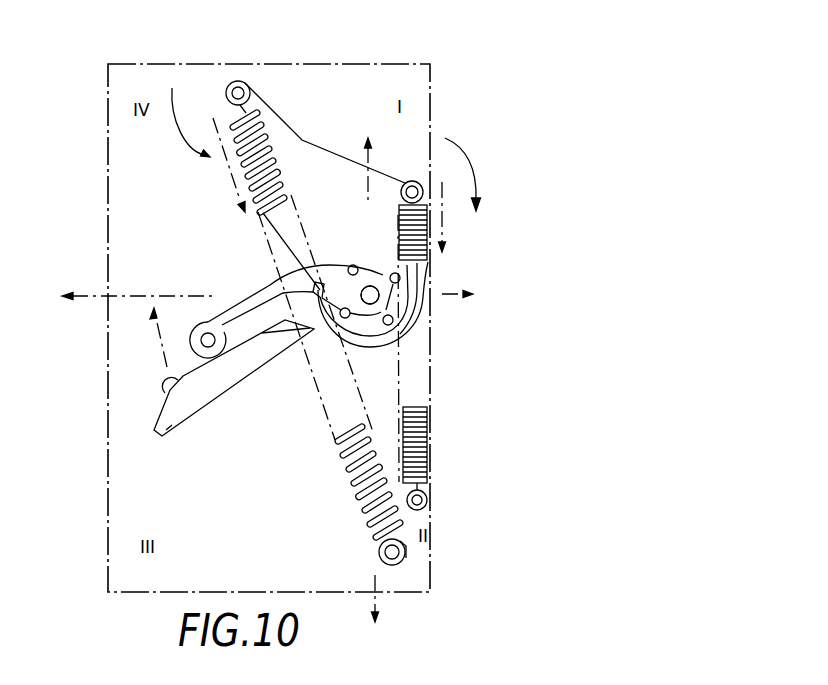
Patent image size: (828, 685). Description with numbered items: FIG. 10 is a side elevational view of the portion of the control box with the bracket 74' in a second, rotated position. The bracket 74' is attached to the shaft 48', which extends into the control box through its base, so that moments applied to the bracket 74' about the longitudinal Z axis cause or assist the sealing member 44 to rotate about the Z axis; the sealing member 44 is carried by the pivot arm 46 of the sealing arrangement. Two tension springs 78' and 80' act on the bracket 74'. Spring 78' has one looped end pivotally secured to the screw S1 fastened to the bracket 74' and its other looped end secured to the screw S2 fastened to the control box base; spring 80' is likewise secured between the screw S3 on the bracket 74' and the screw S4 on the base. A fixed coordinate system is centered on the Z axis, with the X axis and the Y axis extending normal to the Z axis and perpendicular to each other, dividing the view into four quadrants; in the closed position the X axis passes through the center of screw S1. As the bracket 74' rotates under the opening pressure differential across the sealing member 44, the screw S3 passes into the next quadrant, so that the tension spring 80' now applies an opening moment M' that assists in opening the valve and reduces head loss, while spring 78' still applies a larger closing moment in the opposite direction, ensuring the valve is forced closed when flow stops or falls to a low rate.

The sealing member 44 is at (163, 414).
The pivot arm 46 is at (252, 292).
The shaft 48' is at (370, 277).
The bracket 74' is at (317, 184).
The tension spring 78' is at (349, 482).
The tension spring 80' is at (441, 347).
The screw or fastener S1 is at (240, 80).
The screw or fastener S2 is at (408, 560).
The screw or fastener S3 is at (411, 181).
The screw or fastener S4 is at (426, 508).
The longitudinal Z axis Z is at (373, 305).
The X axis X is at (266, 298).
The Y axis Y is at (370, 380).
The opening moment M' is at (475, 189).